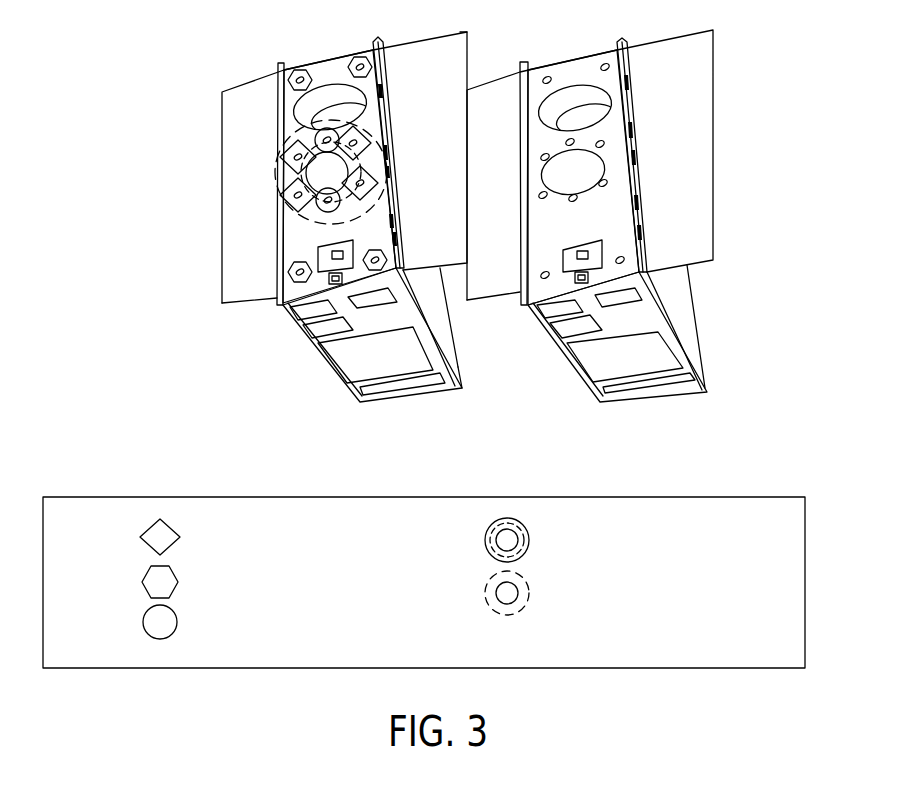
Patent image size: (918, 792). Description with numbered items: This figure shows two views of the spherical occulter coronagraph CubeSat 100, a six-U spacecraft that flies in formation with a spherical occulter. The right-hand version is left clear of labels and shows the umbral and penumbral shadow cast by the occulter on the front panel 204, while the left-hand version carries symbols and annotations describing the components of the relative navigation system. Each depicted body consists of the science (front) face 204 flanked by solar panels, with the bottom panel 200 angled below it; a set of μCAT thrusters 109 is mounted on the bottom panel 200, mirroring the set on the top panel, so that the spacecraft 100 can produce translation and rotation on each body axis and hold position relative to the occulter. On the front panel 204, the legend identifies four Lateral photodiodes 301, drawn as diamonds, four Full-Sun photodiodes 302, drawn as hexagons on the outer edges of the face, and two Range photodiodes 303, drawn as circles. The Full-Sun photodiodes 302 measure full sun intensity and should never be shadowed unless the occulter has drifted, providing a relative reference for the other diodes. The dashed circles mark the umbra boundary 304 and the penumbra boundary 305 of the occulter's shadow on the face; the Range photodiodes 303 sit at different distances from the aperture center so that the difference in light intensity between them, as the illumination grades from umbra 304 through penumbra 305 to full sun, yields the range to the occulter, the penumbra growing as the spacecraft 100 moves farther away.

The spherical occulter coronagraph CubeSat 100 is at (735, 212).
The μCAT thrusters 109 is at (533, 425).
The bottom panel 200 is at (317, 343).
The front panel 204 is at (573, 70).
The Lateral photodiodes 301 is at (140, 538).
The Full-Sun photodiodes 302 is at (140, 580).
The Range photodiodes 303 is at (140, 623).
The umbra boundary 304 is at (482, 545).
The penumbra boundary 305 is at (485, 600).